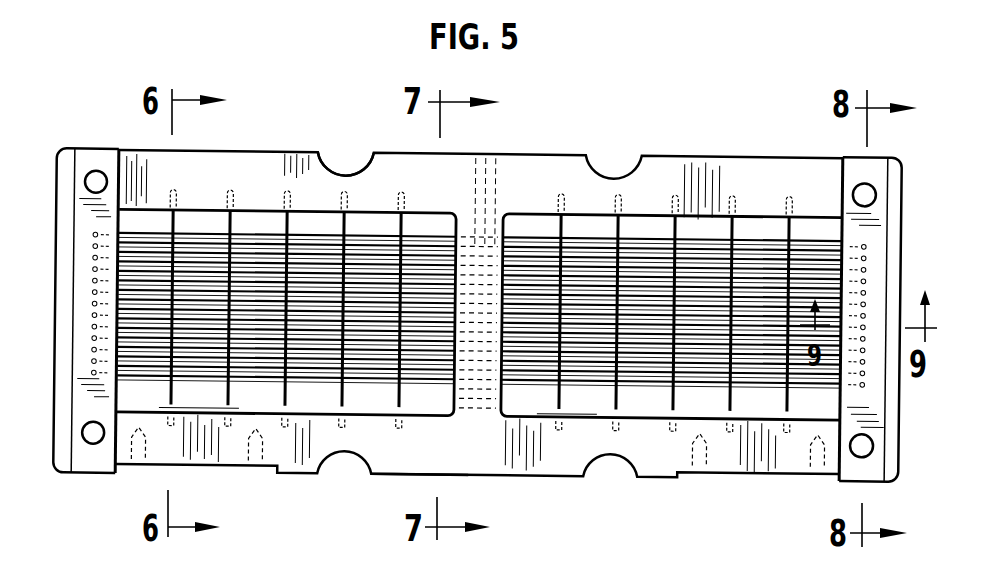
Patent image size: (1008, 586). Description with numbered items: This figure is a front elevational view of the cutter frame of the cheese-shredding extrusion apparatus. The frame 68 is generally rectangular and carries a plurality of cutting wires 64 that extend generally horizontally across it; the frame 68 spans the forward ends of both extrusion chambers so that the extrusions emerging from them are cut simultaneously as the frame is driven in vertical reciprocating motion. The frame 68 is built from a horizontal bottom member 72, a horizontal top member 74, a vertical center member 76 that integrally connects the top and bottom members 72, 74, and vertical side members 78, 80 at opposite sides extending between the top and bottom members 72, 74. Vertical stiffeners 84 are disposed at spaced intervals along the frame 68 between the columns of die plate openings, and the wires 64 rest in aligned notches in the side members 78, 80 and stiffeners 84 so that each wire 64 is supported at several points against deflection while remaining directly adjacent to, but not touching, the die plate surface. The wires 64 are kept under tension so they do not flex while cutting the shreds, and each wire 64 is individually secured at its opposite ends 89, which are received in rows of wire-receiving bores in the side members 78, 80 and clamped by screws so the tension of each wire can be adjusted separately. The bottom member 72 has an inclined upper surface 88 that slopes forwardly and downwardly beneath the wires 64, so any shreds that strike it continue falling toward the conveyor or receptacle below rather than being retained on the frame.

The cutting wires 64 is at (200, 261).
The frame 68 is at (561, 150).
The horizontal bottom member 72 is at (392, 463).
The horizontal top member 74 is at (307, 168).
The vertical center member 76 is at (490, 235).
The vertical side member 78 is at (62, 311).
The vertical side member 80 is at (887, 236).
The vertical stiffeners 84 is at (172, 214).
The inclined upper surface 88 is at (415, 407).
The wire ends 89 is at (94, 259).